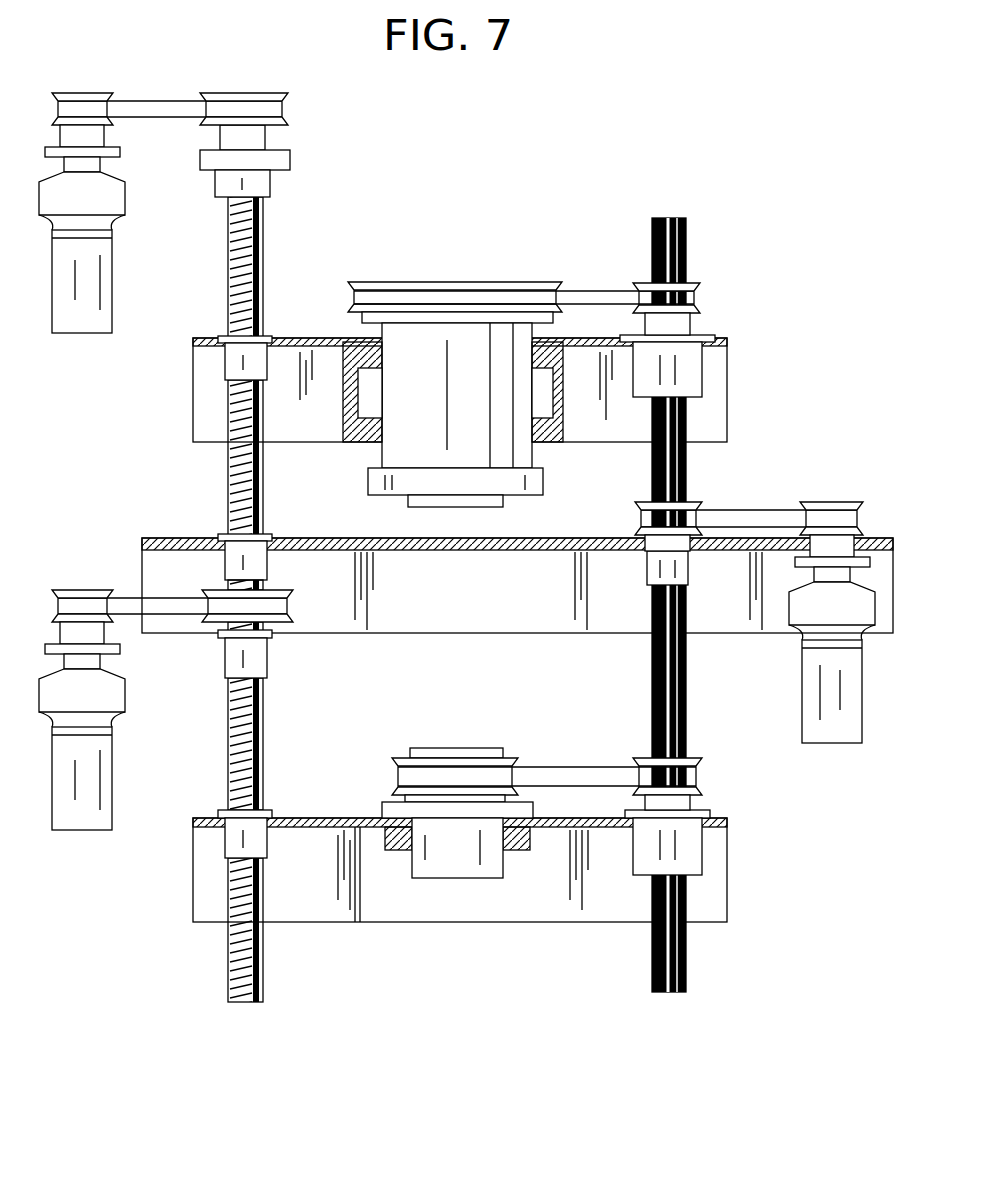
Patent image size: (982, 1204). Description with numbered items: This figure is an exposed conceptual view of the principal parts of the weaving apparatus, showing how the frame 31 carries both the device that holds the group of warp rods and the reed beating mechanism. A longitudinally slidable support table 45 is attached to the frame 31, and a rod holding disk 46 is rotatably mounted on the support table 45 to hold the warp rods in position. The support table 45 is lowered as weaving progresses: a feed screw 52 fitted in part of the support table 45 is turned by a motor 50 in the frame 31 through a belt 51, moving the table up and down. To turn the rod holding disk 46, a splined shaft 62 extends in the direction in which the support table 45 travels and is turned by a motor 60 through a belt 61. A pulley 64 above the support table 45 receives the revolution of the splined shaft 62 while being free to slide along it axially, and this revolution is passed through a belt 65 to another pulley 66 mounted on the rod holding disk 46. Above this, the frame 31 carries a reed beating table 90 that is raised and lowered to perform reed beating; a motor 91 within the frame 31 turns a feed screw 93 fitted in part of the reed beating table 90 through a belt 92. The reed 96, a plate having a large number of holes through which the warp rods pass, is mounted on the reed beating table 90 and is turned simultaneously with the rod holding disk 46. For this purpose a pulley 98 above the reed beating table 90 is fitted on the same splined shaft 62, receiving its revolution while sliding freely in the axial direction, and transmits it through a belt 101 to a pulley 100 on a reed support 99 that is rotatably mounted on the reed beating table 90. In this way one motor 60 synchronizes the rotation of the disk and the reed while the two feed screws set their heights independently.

The frame 31 is at (178, 530).
The support table 45 is at (312, 830).
The rod holding disk 46 is at (470, 878).
The motor 50 is at (110, 760).
The belt 51 is at (130, 598).
The feed screw 52 is at (266, 690).
The motor 60 is at (840, 740).
The belt 61 is at (838, 500).
The splined shaft 62 is at (690, 470).
The pulley 64 is at (692, 766).
The belt 65 is at (572, 768).
The pulley 66 is at (412, 758).
The reed beating table 90 is at (312, 345).
The motor 91 is at (112, 285).
The belt 92 is at (156, 103).
The feed screw 93 is at (266, 228).
The reed 96 is at (500, 506).
The pulley 98 is at (698, 283).
The reed support 99 is at (382, 450).
The pulley 100 is at (430, 282).
The belt 101 is at (586, 291).